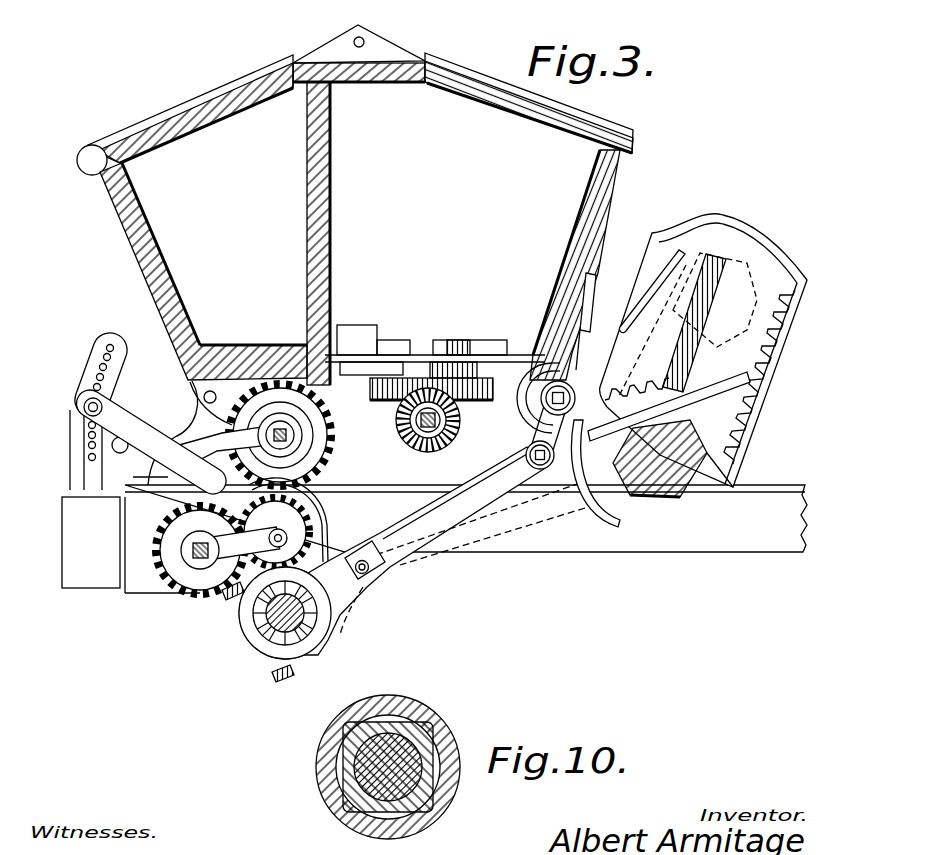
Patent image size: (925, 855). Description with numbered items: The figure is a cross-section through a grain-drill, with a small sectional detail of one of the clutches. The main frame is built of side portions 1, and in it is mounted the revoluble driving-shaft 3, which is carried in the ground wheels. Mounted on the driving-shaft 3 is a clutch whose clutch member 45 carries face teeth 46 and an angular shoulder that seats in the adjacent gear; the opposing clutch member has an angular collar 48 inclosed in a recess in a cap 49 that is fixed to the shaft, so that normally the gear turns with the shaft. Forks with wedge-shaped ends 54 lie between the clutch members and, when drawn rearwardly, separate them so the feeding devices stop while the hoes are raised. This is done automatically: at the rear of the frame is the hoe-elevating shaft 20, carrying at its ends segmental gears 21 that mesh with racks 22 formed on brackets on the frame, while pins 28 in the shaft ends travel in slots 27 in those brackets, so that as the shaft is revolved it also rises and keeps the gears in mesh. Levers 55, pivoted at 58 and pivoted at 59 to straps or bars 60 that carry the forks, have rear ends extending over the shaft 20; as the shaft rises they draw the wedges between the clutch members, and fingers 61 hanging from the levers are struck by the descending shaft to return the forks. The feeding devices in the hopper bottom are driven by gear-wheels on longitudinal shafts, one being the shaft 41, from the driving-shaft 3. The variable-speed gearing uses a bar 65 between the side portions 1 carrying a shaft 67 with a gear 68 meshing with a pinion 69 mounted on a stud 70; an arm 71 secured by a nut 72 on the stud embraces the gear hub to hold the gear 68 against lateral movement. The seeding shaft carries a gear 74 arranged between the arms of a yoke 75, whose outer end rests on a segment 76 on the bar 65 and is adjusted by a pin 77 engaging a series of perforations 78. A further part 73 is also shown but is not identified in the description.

In FIG. 3, the side portions 1 is at (466, 518).
In FIG. 3, the driving-shaft 3 is at (253, 625).
In FIG. 10, the driving-shaft 3 is at (388, 767).
In FIG. 3, the shaft 20 is at (672, 492).
In FIG. 3, the segmental gears 21 is at (713, 470).
In FIG. 3, the racks 22 is at (747, 433).
In FIG. 3, the slots 27 is at (720, 258).
In FIG. 3, the pins 28 is at (642, 503).
In FIG. 3, the shaft 41 is at (427, 438).
In FIG. 3, the clutch member 45 is at (272, 650).
In FIG. 3, the teeth 46 is at (265, 635).
In FIG. 10, the angular collar 48 is at (425, 715).
In FIG. 10, the cap 49 is at (447, 738).
In FIG. 3, the wedge-shaped ends 54 is at (284, 676).
In FIG. 3, the levers 55 is at (669, 406).
In FIG. 3, the pivot 58 is at (541, 400).
In FIG. 3, the pivot 59 is at (540, 470).
In FIG. 3, the straps or bars 60 is at (462, 510).
In FIG. 3, the fingers 61 is at (590, 505).
In FIG. 3, the bar 65 is at (91, 542).
In FIG. 3, the shaft 67 is at (210, 562).
In FIG. 3, the gear 68 is at (190, 580).
In FIG. 3, the pinion 69 is at (310, 521).
In FIG. 3, the stud 70 is at (275, 532).
In FIG. 3, the arm 71 is at (238, 544).
In FIG. 3, the nut 72 is at (294, 540).
In FIG. 3, the shaft 73 is at (280, 448).
In FIG. 3, the gear 74 is at (280, 435).
In FIG. 3, the yoke 75 is at (169, 442).
In FIG. 3, the segment 76 is at (74, 440).
In FIG. 3, the pin 77 is at (118, 398).
In FIG. 3, the perforations 78 is at (92, 461).